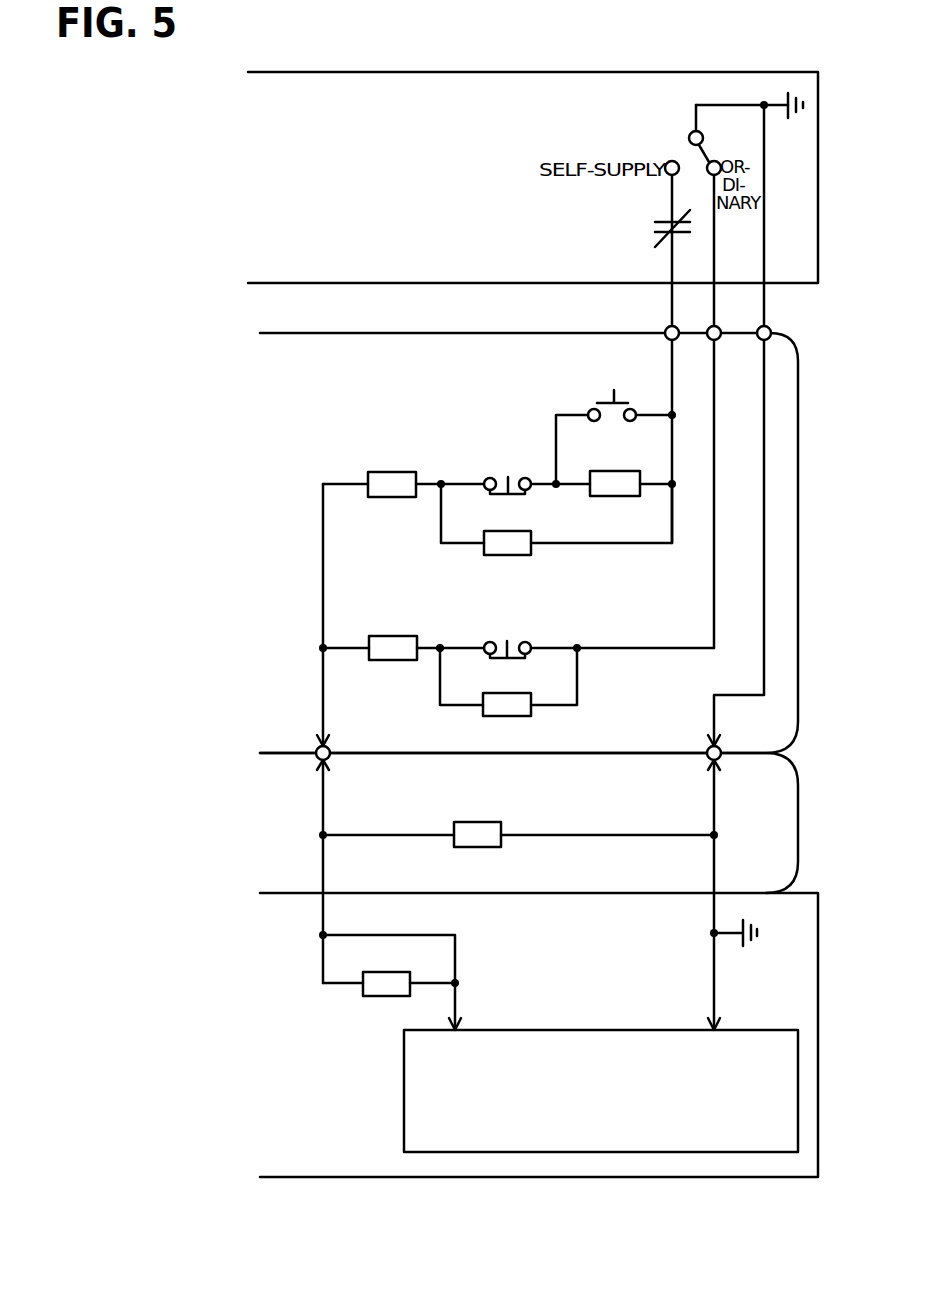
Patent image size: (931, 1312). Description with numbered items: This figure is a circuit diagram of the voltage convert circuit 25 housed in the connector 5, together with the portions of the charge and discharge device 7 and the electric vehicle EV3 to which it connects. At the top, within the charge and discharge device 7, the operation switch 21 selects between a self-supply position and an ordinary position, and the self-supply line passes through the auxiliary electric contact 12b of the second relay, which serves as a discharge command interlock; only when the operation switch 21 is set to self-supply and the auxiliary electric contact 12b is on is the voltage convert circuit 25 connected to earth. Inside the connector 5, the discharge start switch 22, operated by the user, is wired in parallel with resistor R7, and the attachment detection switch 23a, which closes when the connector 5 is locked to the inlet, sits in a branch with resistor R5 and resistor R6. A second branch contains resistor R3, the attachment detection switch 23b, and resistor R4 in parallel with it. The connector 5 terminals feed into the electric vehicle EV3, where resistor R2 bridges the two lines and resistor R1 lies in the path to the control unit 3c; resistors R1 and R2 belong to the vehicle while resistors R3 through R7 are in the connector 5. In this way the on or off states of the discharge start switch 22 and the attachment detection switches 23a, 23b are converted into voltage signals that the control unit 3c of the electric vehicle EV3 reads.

The charge and discharge device 7 is at (412, 88).
The operation switch 21 is at (713, 160).
The auxiliary electric contact 12b is at (655, 237).
The connector 5 is at (208, 333).
The voltage convert circuit 25 is at (412, 556).
The discharge start switch 22 is at (624, 402).
The attachment detection switch 23a is at (506, 477).
The attachment detection switch 23b is at (506, 641).
The resistor R1 is at (378, 972).
The resistor R2 is at (494, 822).
The resistor R3 is at (392, 636).
The resistor R4 is at (497, 693).
The resistor R5 is at (392, 472).
The resistor R6 is at (516, 555).
The resistor R7 is at (620, 471).
The control unit 3c is at (585, 1030).
The electric vehicle EV3 is at (366, 1078).